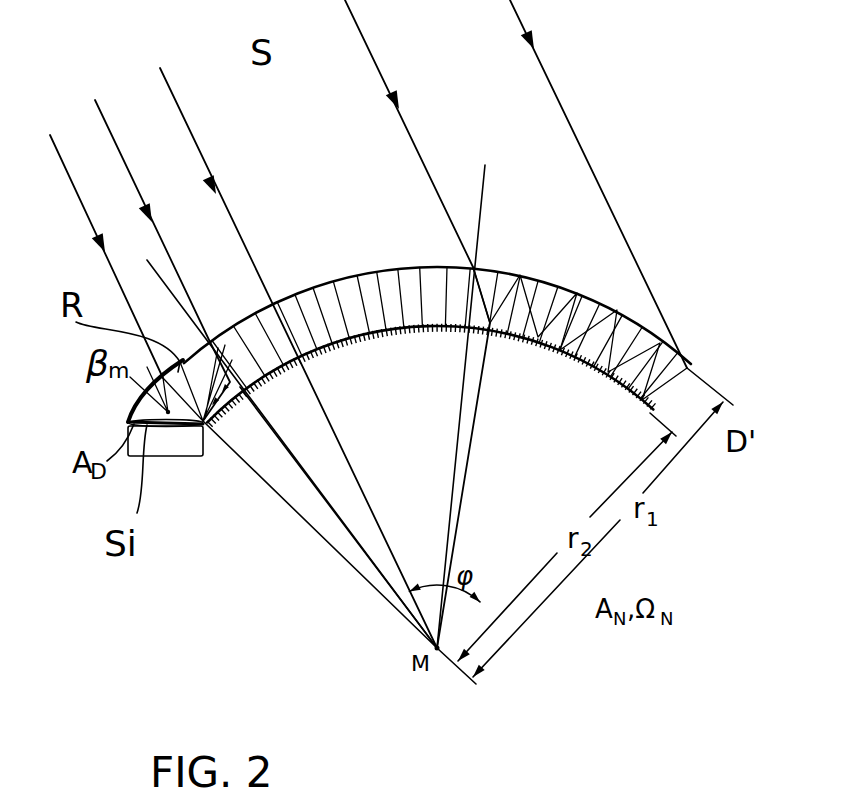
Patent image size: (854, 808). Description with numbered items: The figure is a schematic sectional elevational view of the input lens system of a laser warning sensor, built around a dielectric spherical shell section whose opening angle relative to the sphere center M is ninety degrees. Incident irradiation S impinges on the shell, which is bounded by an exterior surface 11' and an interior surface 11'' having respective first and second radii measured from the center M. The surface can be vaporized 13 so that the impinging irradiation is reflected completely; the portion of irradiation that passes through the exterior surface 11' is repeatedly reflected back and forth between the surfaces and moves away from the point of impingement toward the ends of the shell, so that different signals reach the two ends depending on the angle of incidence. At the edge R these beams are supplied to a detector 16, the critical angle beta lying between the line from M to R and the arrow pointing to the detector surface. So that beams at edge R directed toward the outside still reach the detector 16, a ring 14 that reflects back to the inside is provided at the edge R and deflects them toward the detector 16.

The exterior surface 11' is at (437, 261).
The interior surface 11'' is at (431, 309).
The vaporized coating 13 is at (345, 330).
The ring 14 is at (141, 394).
The detector 16 is at (188, 446).